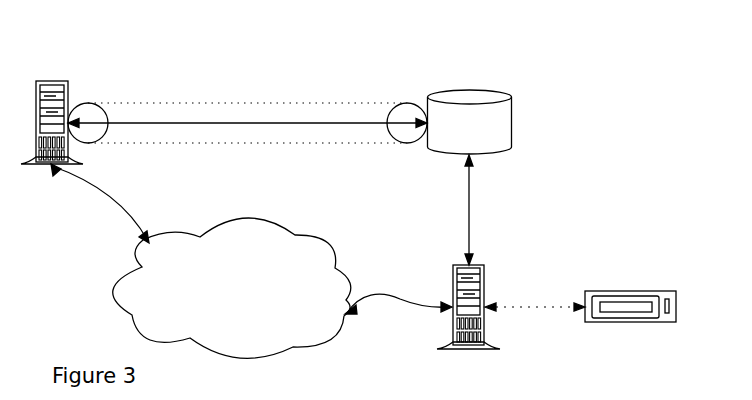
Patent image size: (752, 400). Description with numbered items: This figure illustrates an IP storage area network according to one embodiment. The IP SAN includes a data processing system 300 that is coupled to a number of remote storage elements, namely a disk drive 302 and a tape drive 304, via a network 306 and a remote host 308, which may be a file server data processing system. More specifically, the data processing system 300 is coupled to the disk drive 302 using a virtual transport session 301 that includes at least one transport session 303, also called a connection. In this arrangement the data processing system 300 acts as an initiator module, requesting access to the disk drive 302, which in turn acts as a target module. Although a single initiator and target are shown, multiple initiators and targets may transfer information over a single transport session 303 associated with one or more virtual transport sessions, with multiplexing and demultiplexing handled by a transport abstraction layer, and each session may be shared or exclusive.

The data processing system 300 is at (68, 80).
The virtual transport session 301 is at (260, 103).
The disk drive 302 is at (497, 93).
The transport session 303 is at (163, 123).
The tape drive 304 is at (645, 291).
The network 306 is at (253, 302).
The remote host 308 is at (484, 285).